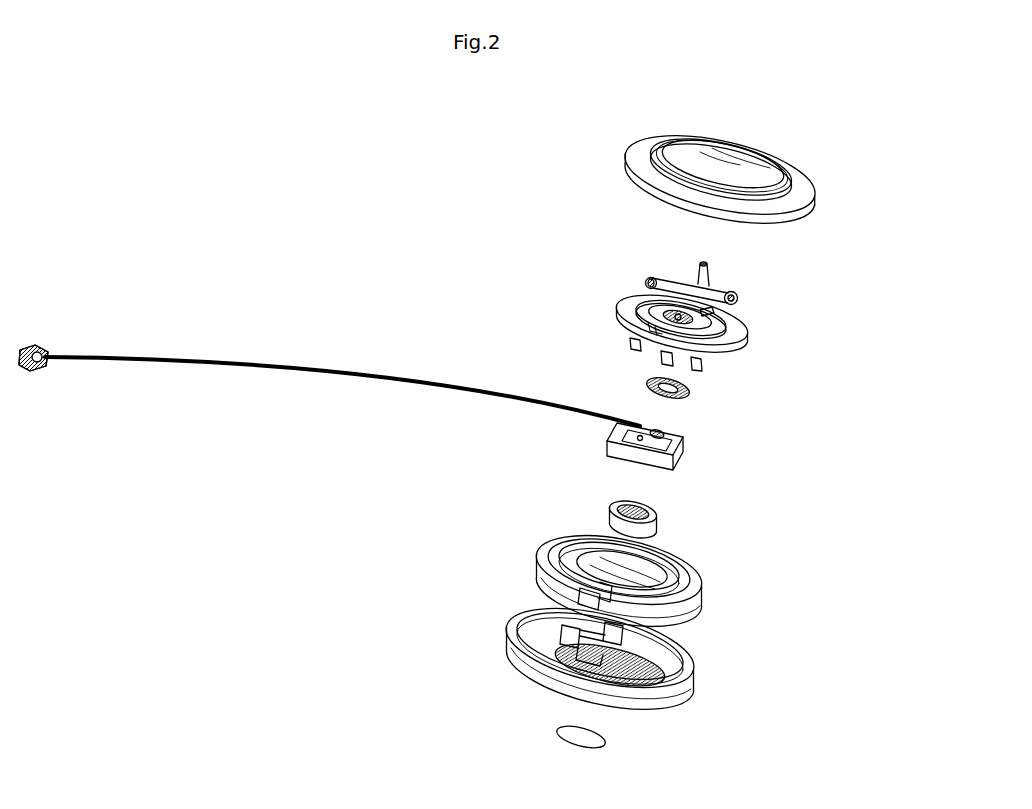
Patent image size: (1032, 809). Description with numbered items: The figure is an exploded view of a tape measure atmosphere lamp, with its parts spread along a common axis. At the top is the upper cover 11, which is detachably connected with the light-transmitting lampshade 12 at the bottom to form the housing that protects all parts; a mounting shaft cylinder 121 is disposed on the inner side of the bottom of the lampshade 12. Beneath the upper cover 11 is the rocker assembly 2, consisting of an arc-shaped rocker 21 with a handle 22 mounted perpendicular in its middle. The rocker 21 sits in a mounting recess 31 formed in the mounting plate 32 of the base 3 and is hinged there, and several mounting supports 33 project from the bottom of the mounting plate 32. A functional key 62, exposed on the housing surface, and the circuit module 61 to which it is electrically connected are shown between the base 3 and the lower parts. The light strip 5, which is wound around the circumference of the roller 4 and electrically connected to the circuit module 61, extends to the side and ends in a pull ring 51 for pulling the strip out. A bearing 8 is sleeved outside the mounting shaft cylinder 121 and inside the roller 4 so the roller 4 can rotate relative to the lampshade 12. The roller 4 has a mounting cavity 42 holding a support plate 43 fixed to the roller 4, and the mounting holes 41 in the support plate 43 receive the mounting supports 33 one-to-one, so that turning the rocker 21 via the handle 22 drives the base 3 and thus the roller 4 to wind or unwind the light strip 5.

The upper cover 11 is at (813, 196).
The rocker assembly 2 is at (758, 267).
The rocker 21 is at (737, 298).
The handle 22 is at (709, 266).
The base 3 is at (747, 358).
The mounting recess 31 is at (750, 332).
The mounting plate 32 is at (733, 350).
The mounting support 33 is at (700, 370).
The functional key 62 is at (648, 385).
The circuit module 61 is at (690, 468).
The light strip 5 is at (329, 411).
The pull ring 51 is at (40, 372).
The bearing 8 is at (660, 530).
The roller 4 is at (613, 579).
The mounting hole 41 is at (580, 538).
The mounting cavity 42 is at (690, 578).
The support plate 43 is at (690, 613).
The lampshade 12 is at (630, 651).
The mounting shaft cylinder 121 is at (547, 660).